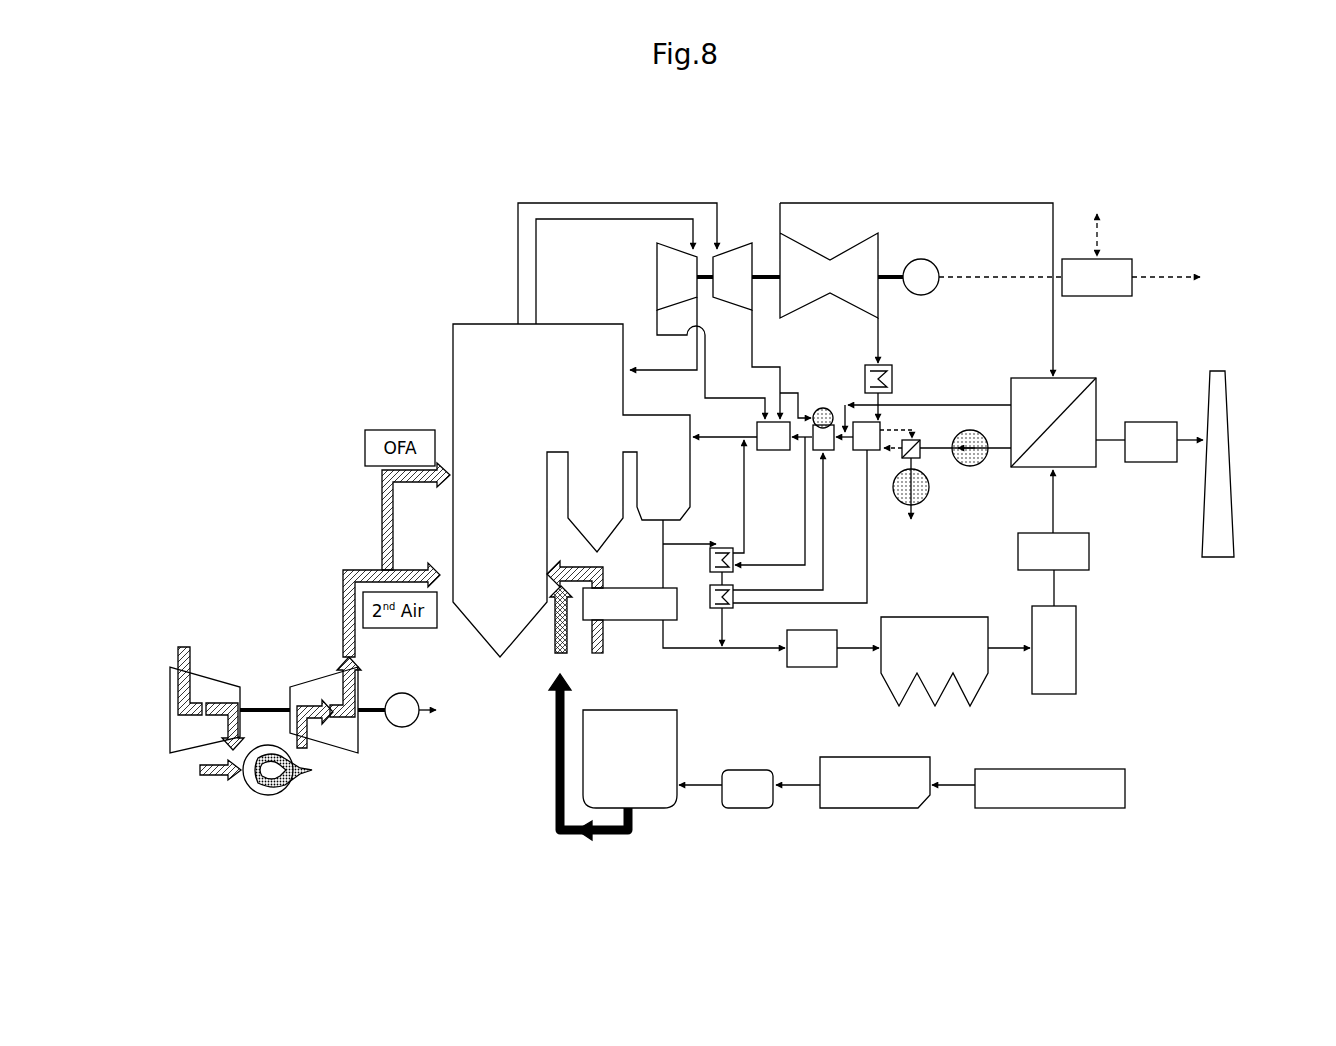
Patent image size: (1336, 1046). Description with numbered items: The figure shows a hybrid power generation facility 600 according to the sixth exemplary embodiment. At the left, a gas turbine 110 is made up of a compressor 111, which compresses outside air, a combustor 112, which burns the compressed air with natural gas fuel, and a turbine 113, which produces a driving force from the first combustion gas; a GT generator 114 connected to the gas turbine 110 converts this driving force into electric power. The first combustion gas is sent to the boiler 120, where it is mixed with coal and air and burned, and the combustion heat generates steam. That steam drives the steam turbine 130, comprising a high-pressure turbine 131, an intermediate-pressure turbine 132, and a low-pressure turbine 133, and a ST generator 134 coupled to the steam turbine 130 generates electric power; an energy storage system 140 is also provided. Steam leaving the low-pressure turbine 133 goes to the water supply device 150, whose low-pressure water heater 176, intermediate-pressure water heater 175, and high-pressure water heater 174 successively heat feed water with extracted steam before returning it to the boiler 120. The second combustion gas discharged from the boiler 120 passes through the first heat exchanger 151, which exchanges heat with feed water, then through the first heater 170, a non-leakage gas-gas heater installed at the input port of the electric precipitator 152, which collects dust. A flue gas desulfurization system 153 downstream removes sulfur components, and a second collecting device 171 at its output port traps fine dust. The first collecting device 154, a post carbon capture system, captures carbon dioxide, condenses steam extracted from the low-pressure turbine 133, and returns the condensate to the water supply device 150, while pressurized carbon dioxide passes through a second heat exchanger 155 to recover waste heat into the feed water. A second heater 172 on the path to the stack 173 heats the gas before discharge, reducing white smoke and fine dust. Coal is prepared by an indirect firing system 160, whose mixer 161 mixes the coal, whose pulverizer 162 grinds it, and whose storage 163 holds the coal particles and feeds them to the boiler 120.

The hybrid power generation facility 600 is at (203, 161).
The gas turbine 110 is at (172, 612).
The compressor 111 is at (170, 712).
The combustor 112 is at (270, 797).
The turbine 113 is at (351, 757).
The GT generator 114 is at (404, 728).
The boiler 120 is at (453, 345).
The steam turbine 130 is at (752, 208).
The high-pressure turbine 131 is at (680, 247).
The intermediate-pressure turbine 132 is at (733, 247).
The low-pressure turbine 133 is at (857, 243).
The ST generator 134 is at (921, 258).
The energy storage system 140 is at (1117, 258).
The water supply device 150 is at (816, 407).
The first heat exchanger 151 is at (702, 611).
The electric precipitator 152 is at (963, 696).
The flue gas desulfurization system 153 is at (1078, 680).
The first collecting device 154 is at (1081, 377).
The second heat exchanger 155 is at (923, 455).
The indirect firing system 160 is at (702, 838).
The mixer 161 is at (876, 810).
The pulverizer 162 is at (747, 810).
The storage 163 is at (642, 812).
The first heater 170 is at (815, 670).
The second collecting device 171 is at (1090, 553).
The second heater 172 is at (1150, 463).
The stack 173 is at (1236, 533).
The high-pressure water heater 174 is at (770, 452).
The intermediate-pressure water heater 175 is at (830, 452).
The low-pressure water heater 176 is at (870, 455).